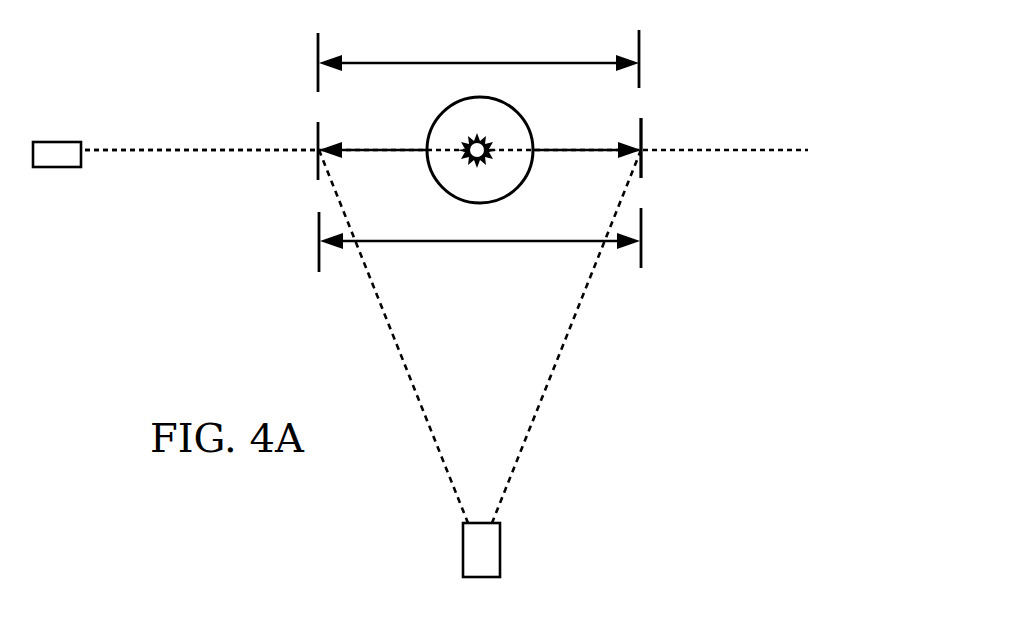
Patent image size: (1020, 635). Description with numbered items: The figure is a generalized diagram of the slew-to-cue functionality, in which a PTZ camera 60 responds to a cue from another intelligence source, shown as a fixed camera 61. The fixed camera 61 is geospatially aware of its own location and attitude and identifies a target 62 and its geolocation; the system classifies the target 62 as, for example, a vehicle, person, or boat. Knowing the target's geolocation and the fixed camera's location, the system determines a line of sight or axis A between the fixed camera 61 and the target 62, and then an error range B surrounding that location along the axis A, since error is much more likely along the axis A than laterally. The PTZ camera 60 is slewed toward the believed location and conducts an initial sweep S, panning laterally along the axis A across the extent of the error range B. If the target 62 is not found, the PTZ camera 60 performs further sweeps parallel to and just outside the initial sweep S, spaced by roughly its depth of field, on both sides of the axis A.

The PTZ camera 60 is at (500, 536).
The fixed camera 61 is at (72, 142).
The target 62 is at (486, 140).
The axis A is at (182, 152).
The error range B is at (584, 149).
The initial sweep S is at (661, 140).